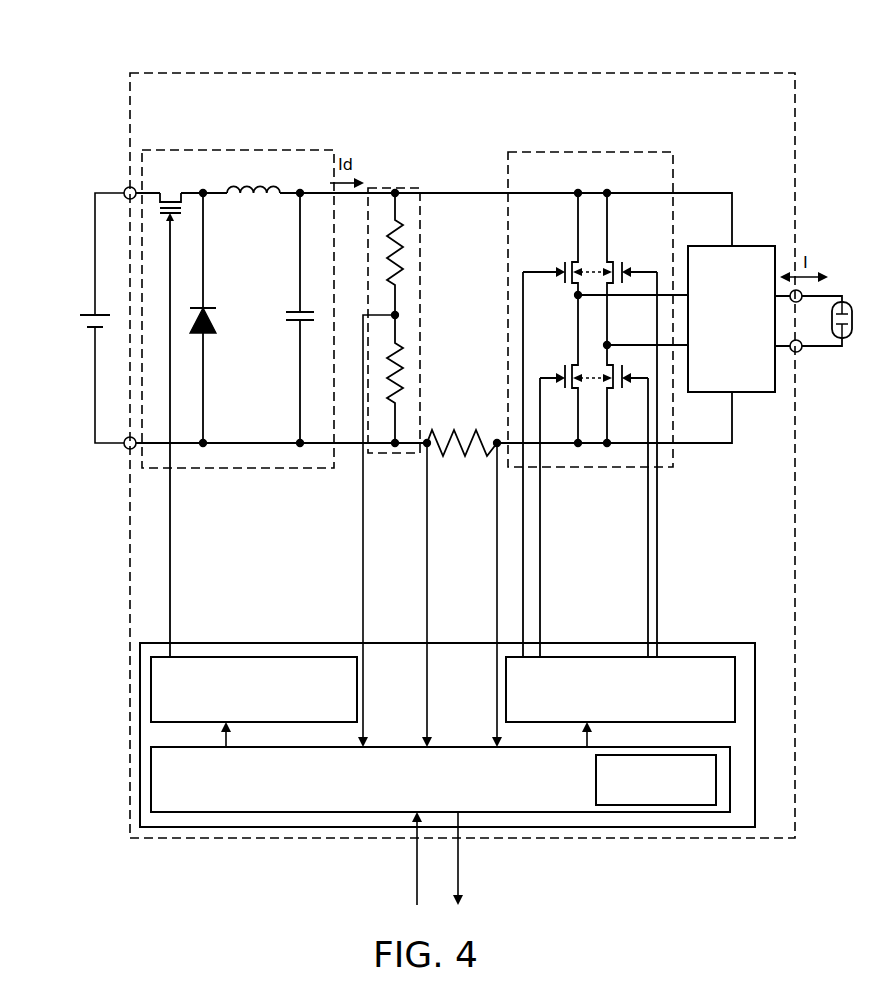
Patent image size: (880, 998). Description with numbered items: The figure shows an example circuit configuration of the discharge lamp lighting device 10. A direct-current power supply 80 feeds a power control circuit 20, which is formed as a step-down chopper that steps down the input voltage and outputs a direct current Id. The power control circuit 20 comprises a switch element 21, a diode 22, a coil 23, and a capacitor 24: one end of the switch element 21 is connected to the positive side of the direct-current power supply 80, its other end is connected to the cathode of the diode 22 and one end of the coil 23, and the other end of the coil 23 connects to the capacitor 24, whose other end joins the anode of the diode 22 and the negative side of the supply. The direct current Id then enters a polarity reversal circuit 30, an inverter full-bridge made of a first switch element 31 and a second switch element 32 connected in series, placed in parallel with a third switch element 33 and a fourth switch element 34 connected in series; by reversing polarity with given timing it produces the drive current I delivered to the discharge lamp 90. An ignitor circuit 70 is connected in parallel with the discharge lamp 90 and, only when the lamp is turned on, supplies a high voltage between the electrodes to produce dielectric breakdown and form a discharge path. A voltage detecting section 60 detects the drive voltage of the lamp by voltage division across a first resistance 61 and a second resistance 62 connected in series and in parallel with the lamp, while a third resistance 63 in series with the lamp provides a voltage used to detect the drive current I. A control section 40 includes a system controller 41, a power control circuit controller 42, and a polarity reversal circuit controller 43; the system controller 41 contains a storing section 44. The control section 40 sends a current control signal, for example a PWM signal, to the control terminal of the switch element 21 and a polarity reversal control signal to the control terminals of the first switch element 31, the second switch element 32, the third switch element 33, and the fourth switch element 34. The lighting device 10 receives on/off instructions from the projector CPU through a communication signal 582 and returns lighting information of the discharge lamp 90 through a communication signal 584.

The discharge lamp lighting device 10 is at (655, 73).
The power control circuit 20 is at (275, 150).
The switch element 21 is at (170, 190).
The diode 22 is at (216, 318).
The coil 23 is at (266, 177).
The capacitor 24 is at (309, 318).
The polarity reversal circuit 30 is at (600, 152).
The first switch element 31 is at (552, 424).
The second switch element 32 is at (557, 475).
The third switch element 33 is at (631, 424).
The fourth switch element 34 is at (626, 500).
The control section 40 is at (555, 643).
The system controller 41 is at (730, 749).
The power control circuit controller 42 is at (272, 657).
The polarity reversal circuit controller 43 is at (682, 657).
The storing section 44 is at (716, 786).
The voltage detecting section 60 is at (402, 188).
The first resistance 61 is at (422, 253).
The second resistance 62 is at (422, 379).
The third resistance 63 is at (462, 424).
The ignitor circuit 70 is at (750, 246).
The direct-current power supply 80 is at (92, 312).
The discharge lamp 90 is at (845, 300).
The communication signal 582 is at (417, 875).
The communication signal 584 is at (458, 875).